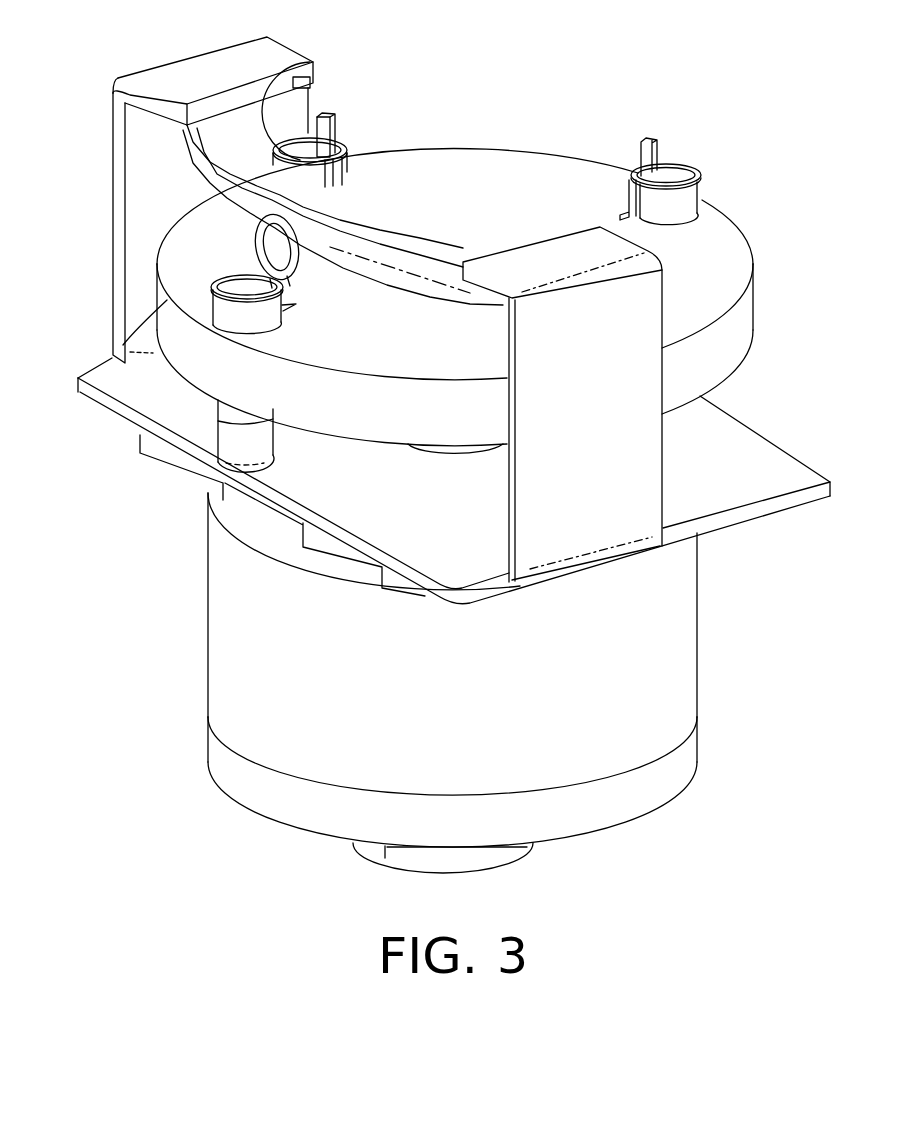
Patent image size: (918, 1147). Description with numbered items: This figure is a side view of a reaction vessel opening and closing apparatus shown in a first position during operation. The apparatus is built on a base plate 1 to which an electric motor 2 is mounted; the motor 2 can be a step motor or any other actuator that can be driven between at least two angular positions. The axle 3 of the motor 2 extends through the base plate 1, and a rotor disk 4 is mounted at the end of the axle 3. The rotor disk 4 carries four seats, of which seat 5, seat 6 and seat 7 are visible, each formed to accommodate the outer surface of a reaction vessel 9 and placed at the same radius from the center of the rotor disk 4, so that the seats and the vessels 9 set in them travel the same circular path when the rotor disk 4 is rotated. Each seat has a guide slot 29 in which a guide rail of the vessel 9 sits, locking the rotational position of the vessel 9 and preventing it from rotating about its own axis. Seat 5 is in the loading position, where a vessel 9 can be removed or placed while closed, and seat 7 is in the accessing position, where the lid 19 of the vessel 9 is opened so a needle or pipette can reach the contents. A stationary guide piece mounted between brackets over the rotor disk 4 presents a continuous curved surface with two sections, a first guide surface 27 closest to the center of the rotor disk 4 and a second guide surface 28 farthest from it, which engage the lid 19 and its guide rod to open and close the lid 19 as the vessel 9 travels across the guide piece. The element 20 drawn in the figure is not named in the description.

The base plate 1 is at (75, 383).
The electric motor 2 is at (233, 765).
The axle 3 is at (455, 449).
The rotor disk 4 is at (468, 148).
The seat 5 is at (683, 220).
The seat 6 is at (350, 180).
The seat 7 is at (212, 307).
The reaction vessel 9 is at (697, 195).
The lid 19 is at (298, 262).
The tab 20 is at (330, 133).
The first guide surface 27 is at (308, 120).
The second guide surface 28 is at (240, 198).
The guide slot 29 is at (625, 217).